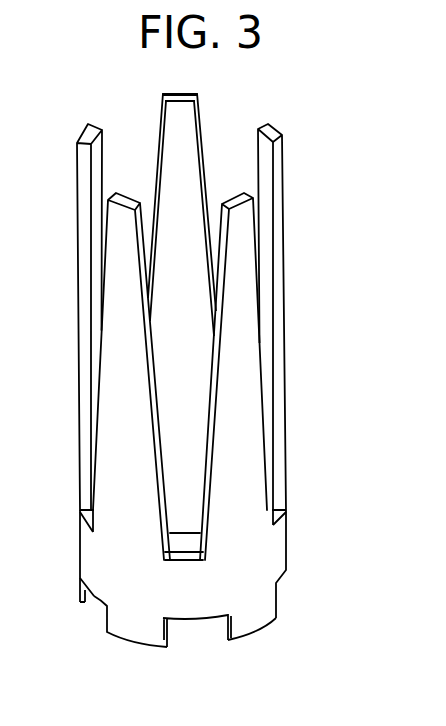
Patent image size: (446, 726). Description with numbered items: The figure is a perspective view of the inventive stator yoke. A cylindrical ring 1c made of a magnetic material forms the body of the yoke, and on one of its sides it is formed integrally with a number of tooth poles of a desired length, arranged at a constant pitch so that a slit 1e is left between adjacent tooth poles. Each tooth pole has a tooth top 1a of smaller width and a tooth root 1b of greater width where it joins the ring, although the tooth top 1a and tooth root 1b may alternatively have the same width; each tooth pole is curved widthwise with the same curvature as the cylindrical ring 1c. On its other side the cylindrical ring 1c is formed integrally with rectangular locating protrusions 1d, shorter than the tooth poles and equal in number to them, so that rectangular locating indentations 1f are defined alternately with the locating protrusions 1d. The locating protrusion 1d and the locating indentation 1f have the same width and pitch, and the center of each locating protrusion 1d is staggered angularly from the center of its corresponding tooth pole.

The tooth top 1a is at (247, 237).
The tooth root 1b is at (242, 498).
The cylindrical ring 1c is at (242, 577).
The locating protrusion 1d is at (248, 612).
The slit 1e is at (228, 143).
The locating indentation 1f is at (197, 630).